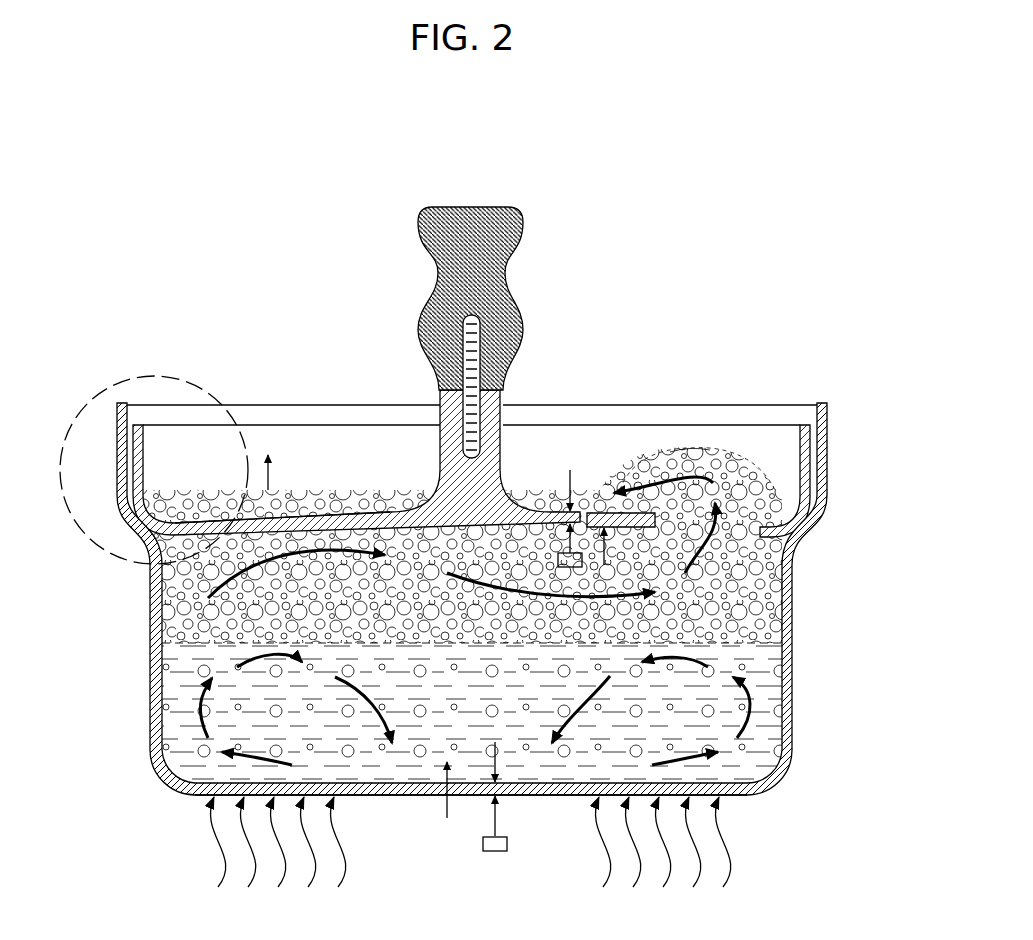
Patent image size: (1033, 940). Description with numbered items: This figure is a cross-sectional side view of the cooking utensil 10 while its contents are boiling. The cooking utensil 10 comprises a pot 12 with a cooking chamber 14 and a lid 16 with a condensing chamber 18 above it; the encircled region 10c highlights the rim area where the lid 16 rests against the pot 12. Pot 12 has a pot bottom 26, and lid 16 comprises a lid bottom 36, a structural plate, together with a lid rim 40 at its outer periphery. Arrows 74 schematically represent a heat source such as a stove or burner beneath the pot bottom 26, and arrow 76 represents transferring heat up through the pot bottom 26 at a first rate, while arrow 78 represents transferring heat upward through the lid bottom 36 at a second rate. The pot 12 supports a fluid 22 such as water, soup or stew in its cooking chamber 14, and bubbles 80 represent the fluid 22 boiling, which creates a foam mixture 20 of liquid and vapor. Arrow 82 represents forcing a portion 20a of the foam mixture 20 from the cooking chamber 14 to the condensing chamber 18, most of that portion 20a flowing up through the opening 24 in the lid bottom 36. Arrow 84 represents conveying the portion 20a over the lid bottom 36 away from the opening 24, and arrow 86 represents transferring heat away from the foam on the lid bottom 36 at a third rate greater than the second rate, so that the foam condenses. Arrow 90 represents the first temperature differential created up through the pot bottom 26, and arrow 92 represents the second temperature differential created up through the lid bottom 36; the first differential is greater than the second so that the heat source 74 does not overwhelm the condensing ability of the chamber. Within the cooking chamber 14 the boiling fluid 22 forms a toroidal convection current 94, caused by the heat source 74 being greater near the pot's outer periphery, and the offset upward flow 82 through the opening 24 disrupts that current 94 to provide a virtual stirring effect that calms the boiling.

The cooking utensil 10 is at (702, 245).
The detail region of rim 10c is at (155, 376).
The pot 12 is at (150, 665).
The cooking chamber 14 is at (436, 643).
The lid 16 is at (331, 424).
The condensing chamber 18 is at (366, 467).
The foam mixture 20 is at (757, 477).
The portion of foam mixture 20a is at (697, 457).
The fluid 22 is at (768, 690).
The opening 24 is at (743, 540).
The pot bottom 26 is at (556, 796).
The lid bottom 36 is at (327, 511).
The lid rim 40 is at (568, 424).
The heat source 74 is at (348, 862).
The first heat transfer rate 76 is at (443, 804).
The second heat transfer rate 78 is at (604, 553).
The bubbles 80 is at (363, 735).
The upward flow 82 is at (710, 557).
The conveying arrow 84 is at (667, 488).
The third heat transfer rate 86 is at (270, 473).
The first temperature differential 90 is at (508, 845).
The second temperature differential 92 is at (568, 478).
The toroidal convection current 94 is at (750, 726).